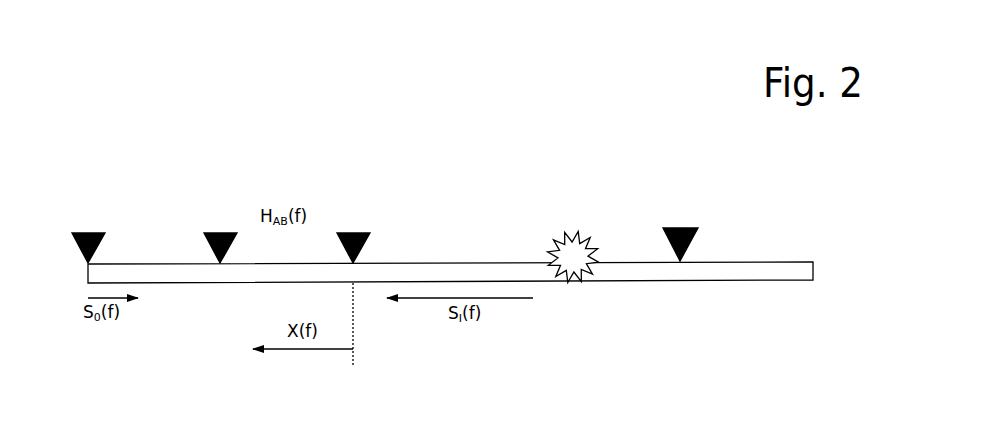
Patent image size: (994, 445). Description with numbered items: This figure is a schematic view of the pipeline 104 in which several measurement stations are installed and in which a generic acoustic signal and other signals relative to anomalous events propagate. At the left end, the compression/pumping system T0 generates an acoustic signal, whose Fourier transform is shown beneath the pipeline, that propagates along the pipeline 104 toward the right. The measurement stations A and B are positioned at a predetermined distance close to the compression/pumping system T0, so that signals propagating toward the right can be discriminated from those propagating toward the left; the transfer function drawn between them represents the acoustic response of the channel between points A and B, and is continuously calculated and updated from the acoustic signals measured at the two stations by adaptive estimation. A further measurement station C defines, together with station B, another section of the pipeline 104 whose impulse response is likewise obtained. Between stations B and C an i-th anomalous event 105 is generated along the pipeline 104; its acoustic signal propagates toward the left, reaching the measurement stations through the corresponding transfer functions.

The pipeline 104 is at (732, 260).
The anomalous event 105 is at (583, 237).
The compression/pumping system T0 is at (88, 234).
The measurement station A is at (220, 234).
The measurement station B is at (353, 234).
The measurement station C is at (680, 231).